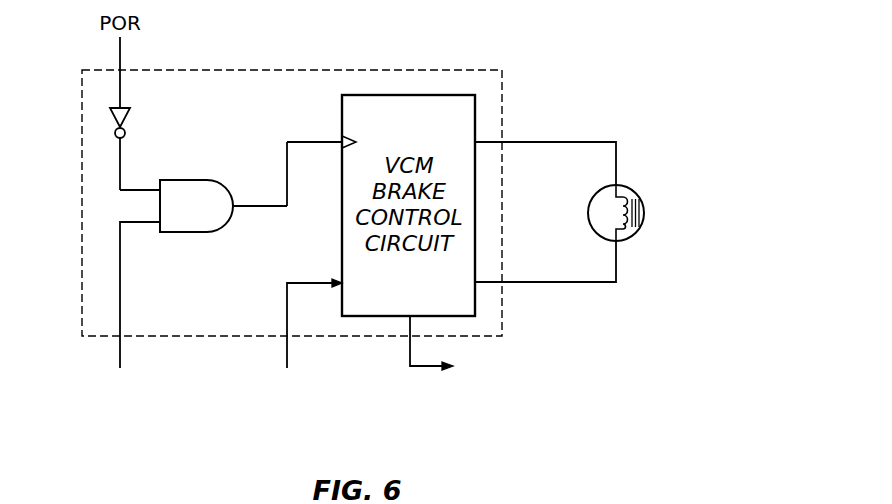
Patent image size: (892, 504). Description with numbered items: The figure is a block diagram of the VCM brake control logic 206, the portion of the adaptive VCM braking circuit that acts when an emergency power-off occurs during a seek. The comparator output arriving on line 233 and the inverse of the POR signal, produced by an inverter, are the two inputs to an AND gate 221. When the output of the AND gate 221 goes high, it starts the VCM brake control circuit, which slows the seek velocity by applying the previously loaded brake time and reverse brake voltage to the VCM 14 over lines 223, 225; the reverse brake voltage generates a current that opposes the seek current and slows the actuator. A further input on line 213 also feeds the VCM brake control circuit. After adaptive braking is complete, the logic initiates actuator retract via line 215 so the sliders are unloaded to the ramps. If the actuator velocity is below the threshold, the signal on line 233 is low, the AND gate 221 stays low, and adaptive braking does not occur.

The VCM brake control logic 206 is at (426, 69).
The AND gate 221 is at (187, 180).
The line 223 is at (571, 141).
The line 225 is at (571, 281).
The VCM 14 is at (644, 213).
The line 233 is at (118, 360).
The input signal line 213 is at (285, 360).
The line 215 is at (408, 360).